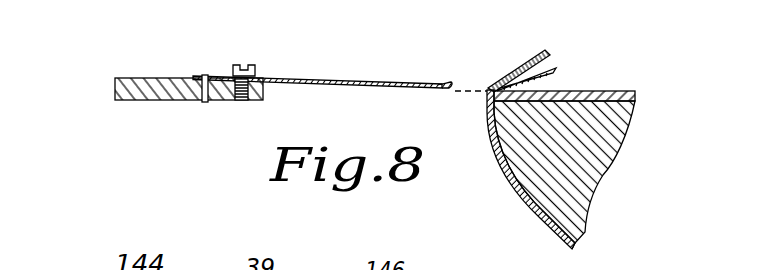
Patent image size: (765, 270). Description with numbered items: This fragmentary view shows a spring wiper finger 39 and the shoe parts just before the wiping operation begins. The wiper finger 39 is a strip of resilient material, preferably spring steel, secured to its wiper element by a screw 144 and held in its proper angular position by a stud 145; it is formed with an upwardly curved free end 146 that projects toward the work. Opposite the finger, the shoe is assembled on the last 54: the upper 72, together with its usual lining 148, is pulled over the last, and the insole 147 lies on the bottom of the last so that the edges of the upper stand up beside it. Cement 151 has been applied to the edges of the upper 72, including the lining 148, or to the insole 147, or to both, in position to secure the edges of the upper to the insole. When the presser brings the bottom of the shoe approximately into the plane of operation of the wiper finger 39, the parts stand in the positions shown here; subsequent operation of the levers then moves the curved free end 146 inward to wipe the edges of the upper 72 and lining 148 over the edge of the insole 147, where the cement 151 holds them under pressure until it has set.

The spring wiper finger 39 is at (358, 83).
The last 54 is at (575, 173).
The upper 72 is at (513, 177).
The screw 144 is at (252, 64).
The stud 145 is at (204, 102).
The upwardly curved free end 146 is at (449, 81).
The insole 147 is at (608, 93).
The lining 148 is at (583, 230).
The cement 151 is at (556, 72).